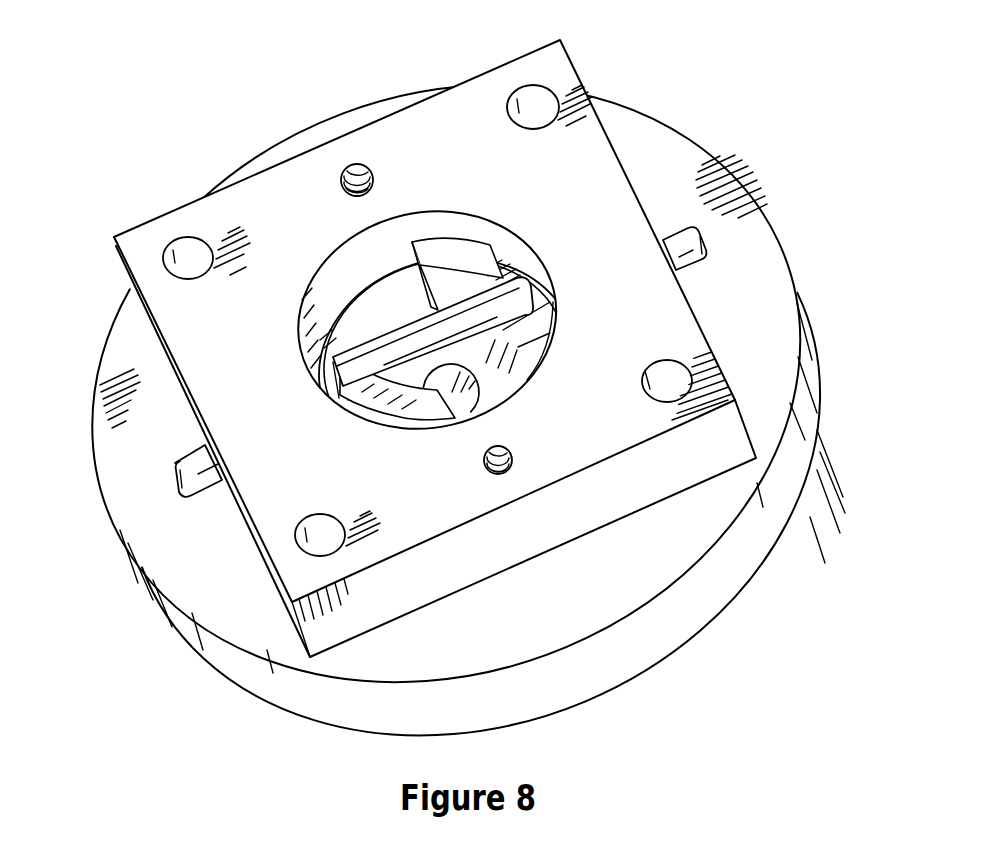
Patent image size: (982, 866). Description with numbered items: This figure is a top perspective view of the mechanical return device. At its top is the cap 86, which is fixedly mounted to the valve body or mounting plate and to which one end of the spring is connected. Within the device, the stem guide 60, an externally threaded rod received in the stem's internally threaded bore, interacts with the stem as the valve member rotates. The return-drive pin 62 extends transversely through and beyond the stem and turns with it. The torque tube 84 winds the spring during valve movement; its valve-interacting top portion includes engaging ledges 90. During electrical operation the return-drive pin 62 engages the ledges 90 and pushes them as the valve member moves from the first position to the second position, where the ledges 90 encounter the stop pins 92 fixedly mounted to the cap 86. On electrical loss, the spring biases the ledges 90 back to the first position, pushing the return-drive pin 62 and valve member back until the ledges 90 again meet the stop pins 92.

The stem guide 60 is at (453, 392).
The return-drive pin 62 is at (455, 322).
The torque tube 84 is at (385, 307).
The cap 86 is at (650, 154).
The engaging ledges 90 is at (440, 250).
The stop pins 92 is at (197, 455).